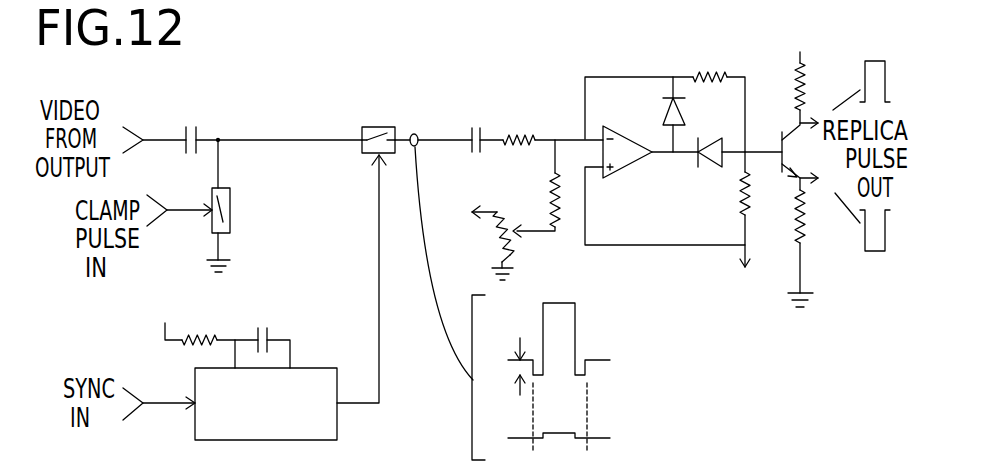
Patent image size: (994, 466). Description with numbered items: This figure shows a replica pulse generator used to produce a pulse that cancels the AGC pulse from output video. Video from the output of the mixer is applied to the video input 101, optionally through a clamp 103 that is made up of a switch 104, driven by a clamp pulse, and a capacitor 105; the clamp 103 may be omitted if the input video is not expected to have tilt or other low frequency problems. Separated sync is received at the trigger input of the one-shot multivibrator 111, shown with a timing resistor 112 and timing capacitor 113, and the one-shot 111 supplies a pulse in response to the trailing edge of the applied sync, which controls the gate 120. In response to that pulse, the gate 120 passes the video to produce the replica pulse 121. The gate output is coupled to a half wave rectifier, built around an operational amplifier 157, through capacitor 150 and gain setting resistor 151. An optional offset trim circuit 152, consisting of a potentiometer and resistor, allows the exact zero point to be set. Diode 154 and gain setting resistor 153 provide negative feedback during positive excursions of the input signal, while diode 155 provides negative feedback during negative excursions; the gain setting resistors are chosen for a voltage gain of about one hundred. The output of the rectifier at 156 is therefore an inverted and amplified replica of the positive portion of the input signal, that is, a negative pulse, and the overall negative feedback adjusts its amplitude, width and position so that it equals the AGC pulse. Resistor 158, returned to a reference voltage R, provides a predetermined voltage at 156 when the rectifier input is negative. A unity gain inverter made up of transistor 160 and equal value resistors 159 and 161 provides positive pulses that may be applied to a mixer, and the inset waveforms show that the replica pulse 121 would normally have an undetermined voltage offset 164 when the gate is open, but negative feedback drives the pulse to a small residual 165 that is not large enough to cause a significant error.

The video input 101 is at (147, 124).
The clamp 103 is at (183, 175).
The switch 104 is at (202, 230).
The capacitor 105 is at (200, 120).
The one-shot multivibrator 111 is at (340, 432).
The timing resistor 112 is at (208, 330).
The timing capacitor 113 is at (282, 336).
The gate 120 is at (405, 249).
The replica pulse 121 is at (578, 317).
The capacitor 150 is at (283, 98).
The gain setting resistor 151 is at (520, 121).
The offset trim circuit 152 is at (497, 182).
The gain setting resistor 153 is at (711, 96).
The diode 154 is at (702, 170).
The diode 155 is at (656, 114).
The rectifier output 156 is at (753, 142).
The operational amplifier 157 is at (628, 173).
The resistor 158 is at (762, 193).
The resistor 159 is at (816, 248).
The transistor 160 is at (801, 150).
The resistor 161 is at (818, 76).
The voltage offset 164 is at (513, 355).
The small residual 165 is at (573, 395).